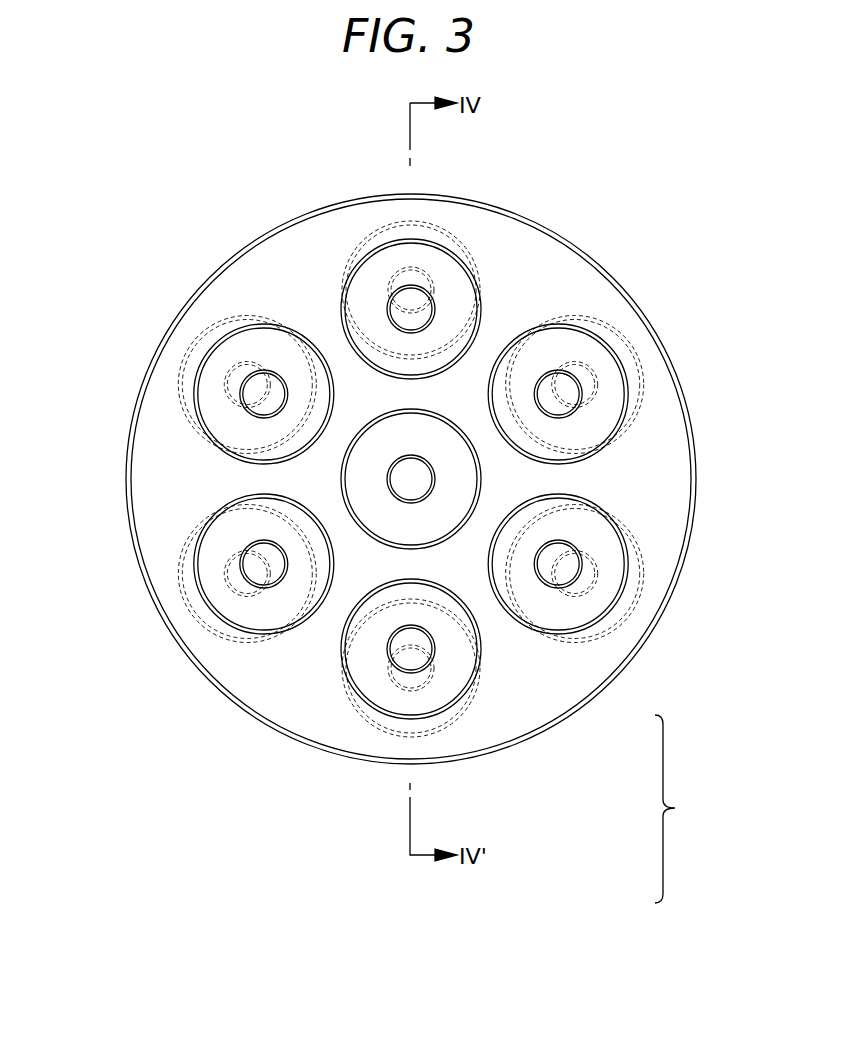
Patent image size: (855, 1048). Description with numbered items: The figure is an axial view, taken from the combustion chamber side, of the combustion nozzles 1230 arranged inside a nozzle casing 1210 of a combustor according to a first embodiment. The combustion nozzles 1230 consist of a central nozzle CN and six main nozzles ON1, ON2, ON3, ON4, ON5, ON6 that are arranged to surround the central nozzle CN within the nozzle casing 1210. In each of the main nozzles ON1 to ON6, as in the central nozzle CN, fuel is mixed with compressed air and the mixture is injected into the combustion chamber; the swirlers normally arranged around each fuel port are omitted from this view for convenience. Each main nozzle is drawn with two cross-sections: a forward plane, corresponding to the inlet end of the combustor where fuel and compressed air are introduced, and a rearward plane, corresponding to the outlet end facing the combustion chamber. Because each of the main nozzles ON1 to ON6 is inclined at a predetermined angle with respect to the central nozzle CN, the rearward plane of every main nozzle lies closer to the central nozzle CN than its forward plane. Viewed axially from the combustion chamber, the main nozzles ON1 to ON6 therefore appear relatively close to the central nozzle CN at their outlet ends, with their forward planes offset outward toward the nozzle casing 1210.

The nozzle casing 1210 is at (578, 247).
The combustion nozzles 1230 is at (670, 809).
The central nozzle CN is at (481, 479).
The main nozzle ON1 is at (365, 246).
The main nozzle ON2 is at (188, 424).
The main nozzle ON3 is at (188, 535).
The main nozzle ON4 is at (367, 714).
The main nozzle ON5 is at (636, 533).
The main nozzle ON6 is at (634, 425).